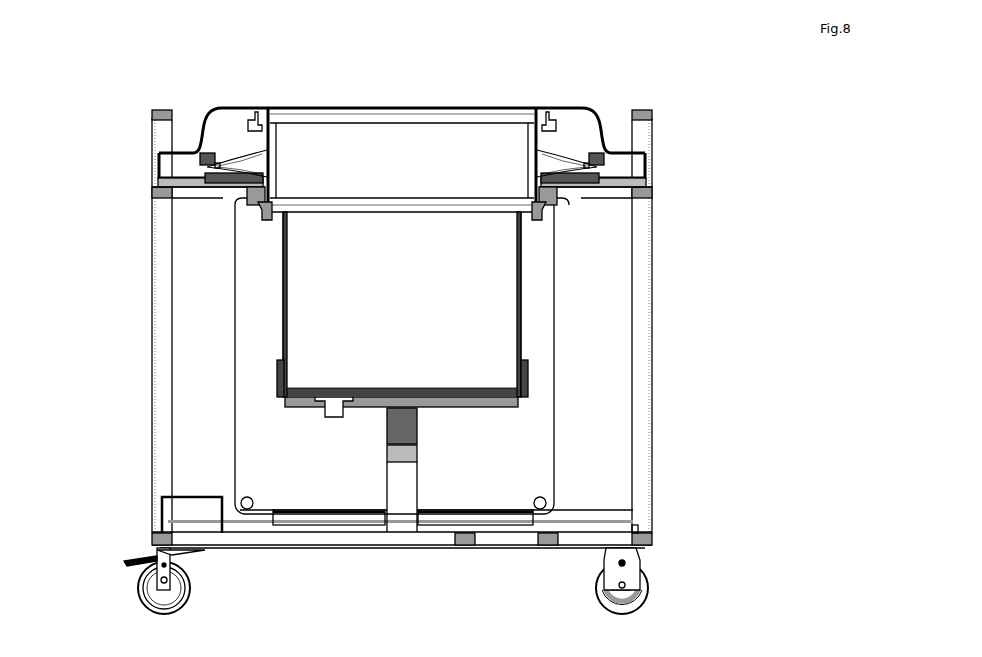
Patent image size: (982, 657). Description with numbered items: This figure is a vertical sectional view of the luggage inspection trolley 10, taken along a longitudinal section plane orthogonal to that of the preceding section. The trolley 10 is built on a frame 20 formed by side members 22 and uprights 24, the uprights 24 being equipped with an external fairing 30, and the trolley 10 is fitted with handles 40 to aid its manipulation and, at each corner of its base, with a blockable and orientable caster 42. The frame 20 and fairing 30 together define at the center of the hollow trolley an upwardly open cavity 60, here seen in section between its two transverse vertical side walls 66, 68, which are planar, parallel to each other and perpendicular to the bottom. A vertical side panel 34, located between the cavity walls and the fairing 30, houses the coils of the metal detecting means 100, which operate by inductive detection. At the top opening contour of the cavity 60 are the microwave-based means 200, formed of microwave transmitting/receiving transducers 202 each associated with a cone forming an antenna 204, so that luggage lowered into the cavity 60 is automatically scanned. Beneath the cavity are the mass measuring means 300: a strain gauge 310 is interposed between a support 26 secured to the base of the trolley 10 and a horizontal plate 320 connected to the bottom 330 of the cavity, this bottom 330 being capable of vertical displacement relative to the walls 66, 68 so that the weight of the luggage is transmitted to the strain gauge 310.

The trolley 10 is at (135, 313).
The frame 20 is at (660, 397).
The side members 22 is at (365, 542).
The uprights 24 is at (155, 363).
The support 26 is at (386, 453).
The fairing 30 is at (596, 108).
The vertical side panel 34 is at (232, 457).
The handles 40 is at (152, 113).
The caster 42 is at (135, 580).
The cavity 60 is at (508, 338).
The side wall 66 is at (287, 279).
The side wall 68 is at (518, 308).
The metal detecting means 100 is at (323, 490).
The microwave-based means 200 is at (570, 118).
The microwave transmitting/receiving means 202 is at (200, 160).
The cone antenna 204 is at (236, 160).
The mass measuring means 300 is at (360, 430).
The strain gauge 310 is at (420, 440).
The horizontal plate 320 is at (480, 405).
The bottom 330 is at (530, 392).